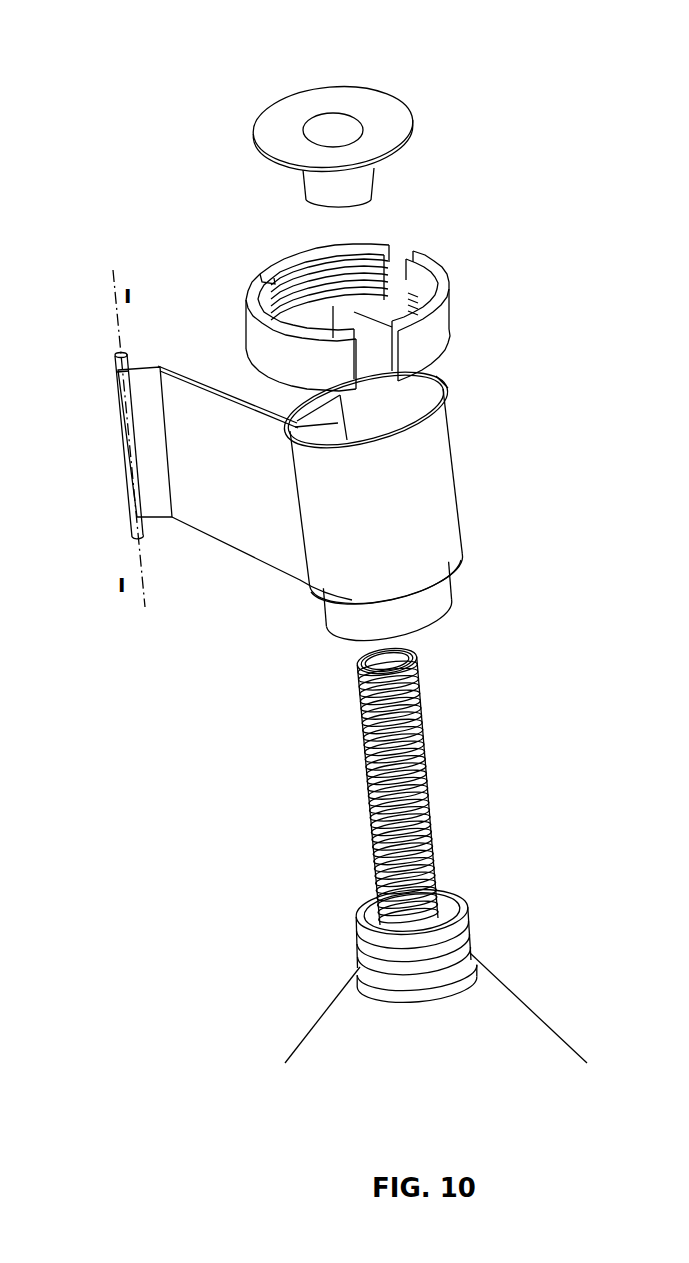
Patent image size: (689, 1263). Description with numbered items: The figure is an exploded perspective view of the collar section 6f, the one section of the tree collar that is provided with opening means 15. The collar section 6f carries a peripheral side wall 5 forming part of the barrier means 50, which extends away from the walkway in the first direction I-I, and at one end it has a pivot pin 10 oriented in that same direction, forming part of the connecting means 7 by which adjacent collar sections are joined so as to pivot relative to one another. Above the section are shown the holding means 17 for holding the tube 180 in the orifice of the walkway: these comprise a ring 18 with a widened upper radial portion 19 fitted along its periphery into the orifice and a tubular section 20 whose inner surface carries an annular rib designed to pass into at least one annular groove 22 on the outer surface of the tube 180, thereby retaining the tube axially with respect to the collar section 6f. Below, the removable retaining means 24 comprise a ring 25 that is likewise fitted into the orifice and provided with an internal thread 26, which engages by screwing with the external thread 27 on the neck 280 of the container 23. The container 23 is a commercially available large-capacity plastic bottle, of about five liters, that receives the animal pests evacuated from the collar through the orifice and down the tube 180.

The holding means 17 is at (401, 90).
The ring 18 is at (352, 106).
The widened upper radial portion 19 is at (277, 108).
The tubular section 20 is at (375, 172).
The removable retaining means 24 is at (527, 305).
The ring 25 is at (425, 275).
The internal thread 26 is at (368, 283).
The barrier means 50 is at (452, 372).
The collar section 6f is at (458, 397).
The peripheral side wall 5 is at (458, 487).
The opening means 15 is at (333, 644).
The pivot pin 10 is at (118, 394).
The connecting means 7 is at (130, 343).
The annular groove 22 is at (347, 785).
The tube 180 is at (386, 858).
The external thread 27 is at (469, 906).
The neck 280 is at (480, 916).
The container 23 is at (315, 1035).